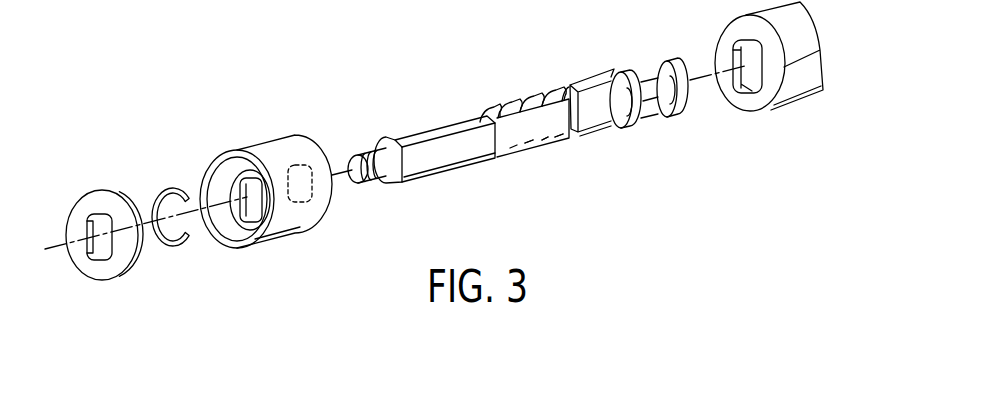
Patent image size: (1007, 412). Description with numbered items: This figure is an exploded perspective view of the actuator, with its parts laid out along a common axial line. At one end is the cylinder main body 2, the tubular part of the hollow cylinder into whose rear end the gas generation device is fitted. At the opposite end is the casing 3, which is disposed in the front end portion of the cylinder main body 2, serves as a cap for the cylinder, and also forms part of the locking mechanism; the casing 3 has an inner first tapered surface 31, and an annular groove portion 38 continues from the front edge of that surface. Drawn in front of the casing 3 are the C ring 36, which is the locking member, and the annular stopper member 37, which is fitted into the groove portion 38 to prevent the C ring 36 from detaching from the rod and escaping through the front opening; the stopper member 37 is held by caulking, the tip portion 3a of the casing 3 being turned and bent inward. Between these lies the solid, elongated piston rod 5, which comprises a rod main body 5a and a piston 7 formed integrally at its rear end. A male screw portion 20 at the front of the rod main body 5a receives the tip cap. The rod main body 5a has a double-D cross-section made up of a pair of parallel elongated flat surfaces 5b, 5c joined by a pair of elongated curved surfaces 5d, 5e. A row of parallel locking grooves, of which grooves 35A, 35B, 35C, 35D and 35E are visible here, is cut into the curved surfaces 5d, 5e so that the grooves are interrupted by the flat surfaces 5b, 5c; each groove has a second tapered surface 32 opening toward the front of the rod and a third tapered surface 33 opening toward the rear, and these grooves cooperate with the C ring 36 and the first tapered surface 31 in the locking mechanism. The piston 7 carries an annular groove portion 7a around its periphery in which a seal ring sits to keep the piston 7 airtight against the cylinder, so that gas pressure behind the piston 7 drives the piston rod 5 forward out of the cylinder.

The cylinder main body 2 is at (802, 95).
The casing 3 is at (254, 199).
The tip portion 3a is at (204, 177).
The first tapered surface 31 is at (227, 170).
The annular groove portion 38 is at (225, 247).
The C ring 36 is at (172, 244).
The stopper member 37 is at (107, 277).
The piston rod 5 is at (658, 58).
The rod main body 5a is at (590, 100).
The elongated flat surface 5b is at (450, 160).
The elongated flat surface 5c is at (382, 147).
The elongated curved surface 5d is at (423, 130).
The elongated curved surface 5e is at (397, 188).
The piston 7 is at (628, 70).
The annular groove portion 7a is at (663, 115).
The male screw portion 20 is at (372, 187).
The second tapered surface 32 is at (513, 150).
The third tapered surface 33 is at (550, 95).
The locking groove 35A is at (488, 112).
The locking groove 35B is at (510, 105).
The locking groove 35C is at (530, 146).
The locking groove 35D is at (548, 141).
The locking groove 35E is at (562, 138).